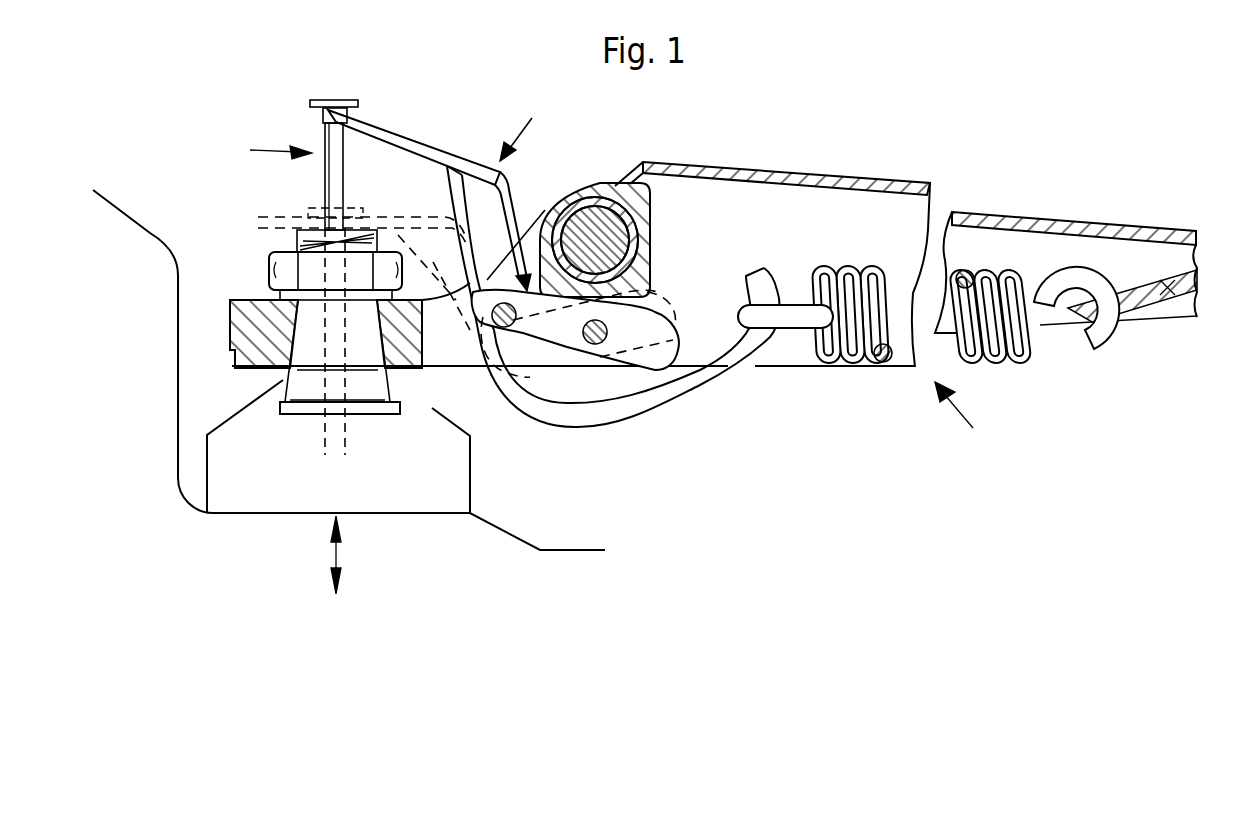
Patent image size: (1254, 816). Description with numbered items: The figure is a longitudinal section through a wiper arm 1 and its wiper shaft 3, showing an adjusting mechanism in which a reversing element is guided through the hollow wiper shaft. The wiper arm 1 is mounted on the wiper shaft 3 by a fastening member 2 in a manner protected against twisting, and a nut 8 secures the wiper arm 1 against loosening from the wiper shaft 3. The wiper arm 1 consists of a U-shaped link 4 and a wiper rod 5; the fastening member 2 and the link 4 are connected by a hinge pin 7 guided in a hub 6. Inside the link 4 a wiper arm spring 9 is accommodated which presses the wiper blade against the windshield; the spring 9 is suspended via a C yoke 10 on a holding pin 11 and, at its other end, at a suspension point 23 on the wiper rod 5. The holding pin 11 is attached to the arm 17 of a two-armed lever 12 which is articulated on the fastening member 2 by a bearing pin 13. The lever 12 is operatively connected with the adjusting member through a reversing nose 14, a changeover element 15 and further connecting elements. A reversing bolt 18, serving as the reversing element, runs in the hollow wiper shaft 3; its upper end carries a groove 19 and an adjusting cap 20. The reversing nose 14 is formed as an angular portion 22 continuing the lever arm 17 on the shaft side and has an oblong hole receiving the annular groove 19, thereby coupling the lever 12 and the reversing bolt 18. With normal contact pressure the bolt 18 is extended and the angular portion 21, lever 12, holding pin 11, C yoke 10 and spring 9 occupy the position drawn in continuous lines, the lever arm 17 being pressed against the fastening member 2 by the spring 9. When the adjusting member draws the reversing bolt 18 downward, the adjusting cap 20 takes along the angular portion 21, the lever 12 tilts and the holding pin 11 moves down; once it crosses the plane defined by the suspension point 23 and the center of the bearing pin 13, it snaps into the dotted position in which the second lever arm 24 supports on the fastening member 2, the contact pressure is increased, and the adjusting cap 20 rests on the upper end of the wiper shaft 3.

The wiper arm 1 is at (963, 420).
The fastening member 2 is at (250, 325).
The wiper shaft 3 is at (300, 378).
The link 4 is at (978, 212).
The wiper rod 5 is at (1165, 285).
The hub 6 is at (572, 200).
The hinge pin 7 is at (595, 225).
The nut 8 is at (278, 258).
The wiper arm spring 9 is at (857, 352).
The C yoke 10 is at (713, 380).
The holding pin 11 is at (465, 315).
The lever 12 is at (572, 337).
The bearing pin 13 is at (607, 340).
The reversing nose 14 is at (524, 190).
The changeover element 15 is at (268, 152).
The lever arm 17 is at (540, 400).
The reversing bolt 18 is at (333, 174).
The groove 19 is at (345, 112).
The adjusting cap 20 is at (332, 103).
The angular portion 21 is at (468, 190).
The angular portion 22 is at (322, 115).
The suspension point 23 is at (1082, 308).
The second lever arm 24 is at (655, 322).